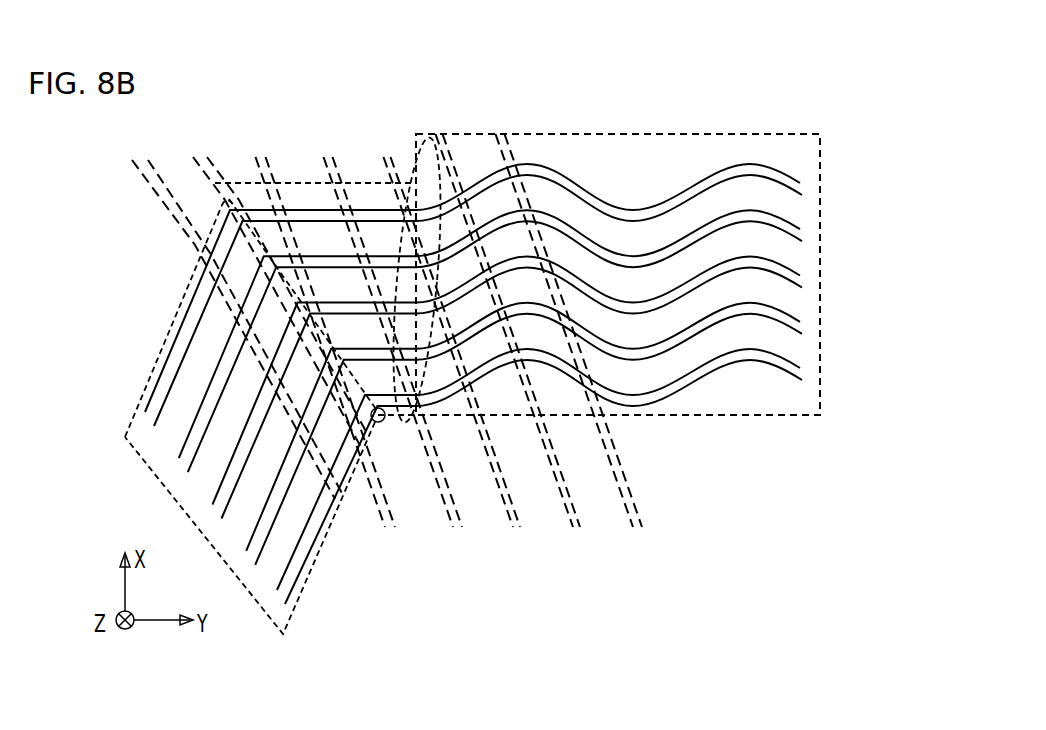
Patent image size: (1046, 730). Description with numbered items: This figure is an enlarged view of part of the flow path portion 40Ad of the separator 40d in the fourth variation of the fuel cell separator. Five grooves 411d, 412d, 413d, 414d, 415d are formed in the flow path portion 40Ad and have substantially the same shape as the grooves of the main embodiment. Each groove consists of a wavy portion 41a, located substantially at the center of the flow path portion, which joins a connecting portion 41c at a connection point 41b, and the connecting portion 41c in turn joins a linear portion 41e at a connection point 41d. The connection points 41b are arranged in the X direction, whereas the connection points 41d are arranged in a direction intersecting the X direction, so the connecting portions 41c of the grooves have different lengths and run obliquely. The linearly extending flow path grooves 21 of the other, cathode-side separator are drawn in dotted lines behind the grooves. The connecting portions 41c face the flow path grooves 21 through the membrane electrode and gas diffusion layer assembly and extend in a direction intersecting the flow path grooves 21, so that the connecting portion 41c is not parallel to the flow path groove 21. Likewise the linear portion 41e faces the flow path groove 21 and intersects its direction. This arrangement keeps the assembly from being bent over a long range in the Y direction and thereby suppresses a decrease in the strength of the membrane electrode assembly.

The separator 40d is at (793, 63).
The flow path portion 40Ad is at (815, 118).
The wavy portion 41a is at (547, 133).
The connection point 41b is at (407, 135).
The connecting portion 41c is at (300, 183).
The connection point 41d is at (190, 242).
The linear portion 41e is at (160, 352).
The groove 411d is at (812, 175).
The groove 412d is at (812, 221).
The groove 413d is at (812, 268).
The groove 414d is at (812, 314).
The groove 415d is at (812, 360).
The flow path groove 21 is at (636, 530).